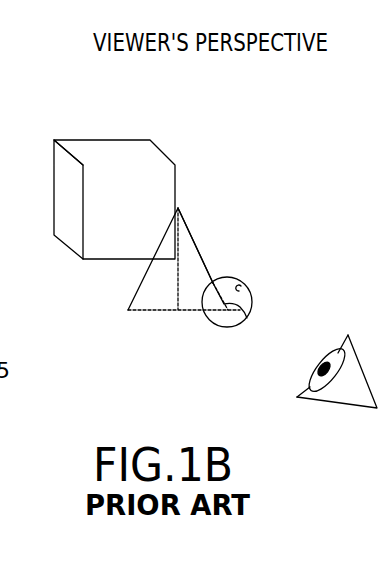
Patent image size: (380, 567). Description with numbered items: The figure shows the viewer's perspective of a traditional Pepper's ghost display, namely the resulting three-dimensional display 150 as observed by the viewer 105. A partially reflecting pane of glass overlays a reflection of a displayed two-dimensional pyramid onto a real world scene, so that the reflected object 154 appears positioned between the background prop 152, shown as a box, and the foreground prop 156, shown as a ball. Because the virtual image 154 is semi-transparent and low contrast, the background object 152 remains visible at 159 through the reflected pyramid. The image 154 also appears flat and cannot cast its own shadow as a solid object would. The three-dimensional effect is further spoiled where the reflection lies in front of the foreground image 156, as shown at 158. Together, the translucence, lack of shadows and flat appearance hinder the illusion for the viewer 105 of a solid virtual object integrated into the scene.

The 3D display 150 is at (247, 171).
The background prop 152 is at (150, 143).
The reflected object 154 is at (205, 268).
The foreground prop 156 is at (276, 287).
The reflection in front of foreground image 158 is at (245, 316).
The visible background object through virtual image 159 is at (165, 260).
The viewer 105 is at (352, 407).